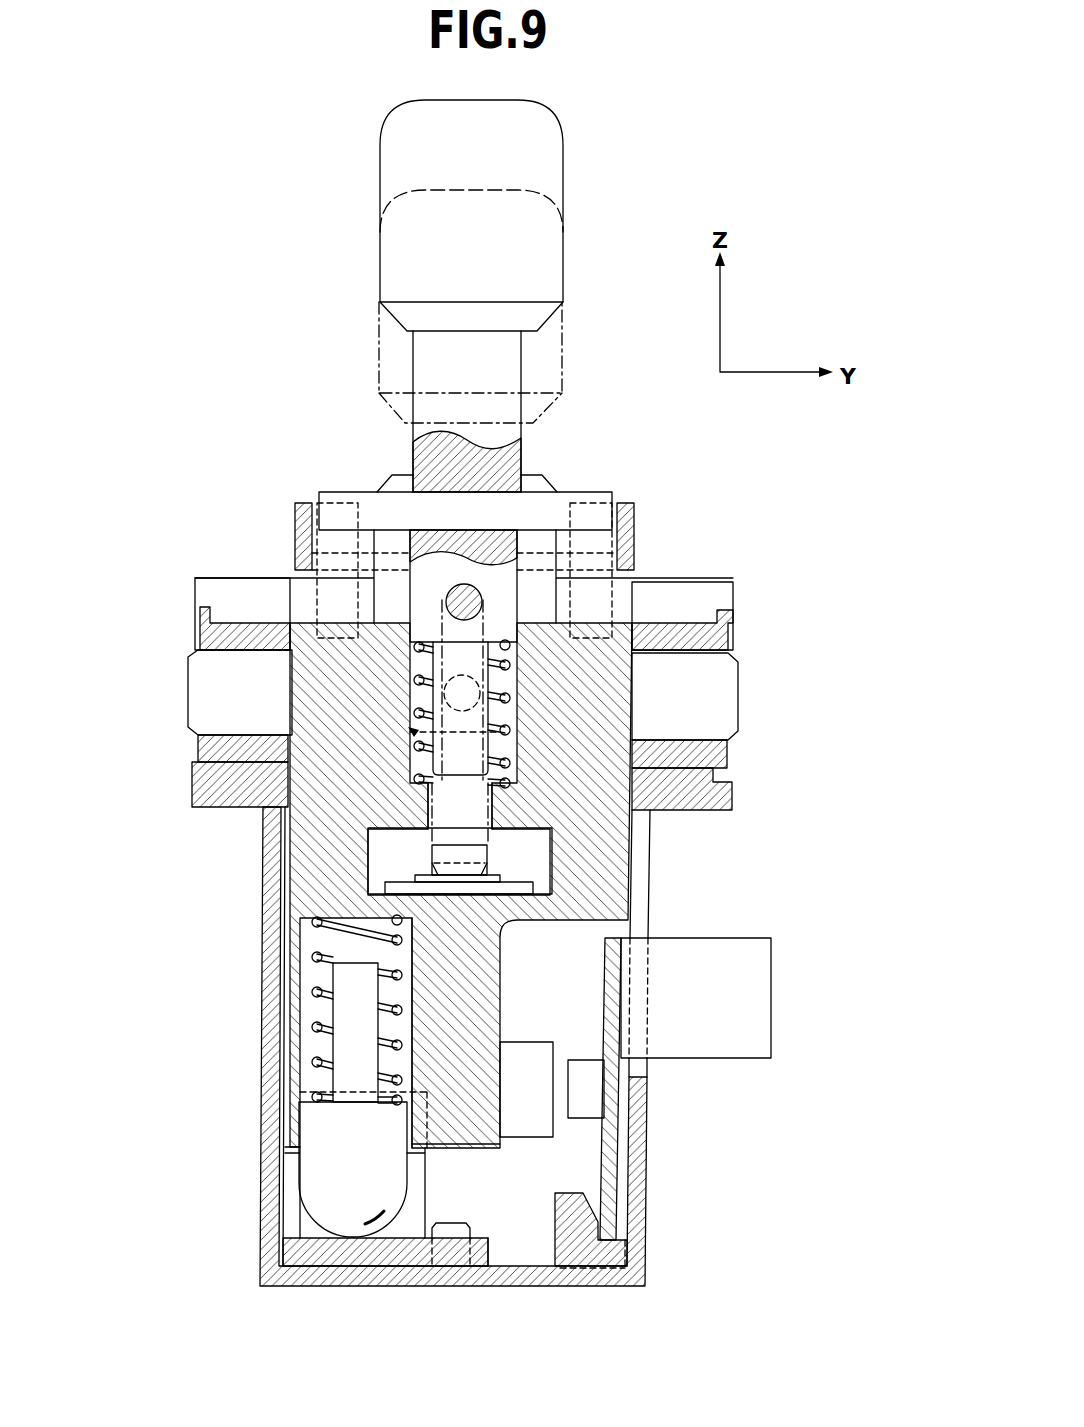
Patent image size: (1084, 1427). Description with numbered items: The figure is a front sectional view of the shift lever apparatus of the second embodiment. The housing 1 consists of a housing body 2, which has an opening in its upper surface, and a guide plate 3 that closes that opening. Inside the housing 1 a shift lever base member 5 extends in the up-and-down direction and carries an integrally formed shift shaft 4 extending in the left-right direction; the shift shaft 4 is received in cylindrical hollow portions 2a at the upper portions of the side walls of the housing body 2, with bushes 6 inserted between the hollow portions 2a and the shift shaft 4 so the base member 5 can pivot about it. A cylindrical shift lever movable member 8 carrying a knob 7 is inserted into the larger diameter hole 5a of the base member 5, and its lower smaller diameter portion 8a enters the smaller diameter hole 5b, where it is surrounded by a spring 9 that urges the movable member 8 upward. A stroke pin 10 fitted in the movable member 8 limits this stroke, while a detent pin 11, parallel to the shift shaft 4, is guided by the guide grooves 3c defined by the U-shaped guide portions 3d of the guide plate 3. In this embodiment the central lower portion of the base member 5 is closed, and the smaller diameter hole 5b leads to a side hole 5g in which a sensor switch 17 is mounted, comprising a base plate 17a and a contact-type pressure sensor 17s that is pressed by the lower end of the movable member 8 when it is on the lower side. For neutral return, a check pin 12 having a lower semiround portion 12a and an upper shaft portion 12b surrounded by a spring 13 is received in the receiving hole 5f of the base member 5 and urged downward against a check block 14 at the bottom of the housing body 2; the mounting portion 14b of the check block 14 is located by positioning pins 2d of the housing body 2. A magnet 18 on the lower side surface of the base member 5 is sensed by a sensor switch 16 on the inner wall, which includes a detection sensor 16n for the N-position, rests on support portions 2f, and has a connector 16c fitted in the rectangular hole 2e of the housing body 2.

The housing 1 is at (822, 512).
The housing body 2 is at (727, 598).
The cylindrical hollow portion 2a is at (245, 792).
The positioning pin 2d is at (455, 1222).
The rectangular hole 2e is at (643, 862).
The support portion 2f is at (580, 1210).
The guide plate 3 is at (497, 537).
The guide groove 3c is at (591, 540).
The guide portion 3d is at (296, 530).
The shift shaft 4 is at (206, 693).
The shift lever base member 5 is at (310, 800).
The larger diameter hole 5a is at (498, 752).
The smaller diameter hole 5b is at (445, 817).
The receiving hole 5f is at (398, 953).
The side hole 5g is at (430, 892).
The bush 6 is at (205, 617).
The knob 7 is at (387, 168).
The shift lever movable member 8 is at (413, 387).
The smaller diameter portion 8a is at (492, 720).
The spring 9 is at (415, 704).
The stroke pin 10 is at (469, 593).
The detent pin 11 is at (370, 503).
The check pin 12 is at (281, 1157).
The semiround portion 12a is at (333, 1226).
The shaft portion 12b is at (335, 1068).
The spring 13 is at (322, 1022).
The check block 14 is at (290, 1212).
The mounting portion 14b is at (487, 1250).
The sensor switch 16 is at (722, 1087).
The connector 16c is at (765, 970).
The detection sensor 16n is at (603, 1088).
The sensor switch 17 is at (142, 853).
The base plate 17a is at (382, 886).
The pressure sensor 17s is at (425, 852).
The magnet 18 is at (537, 1122).